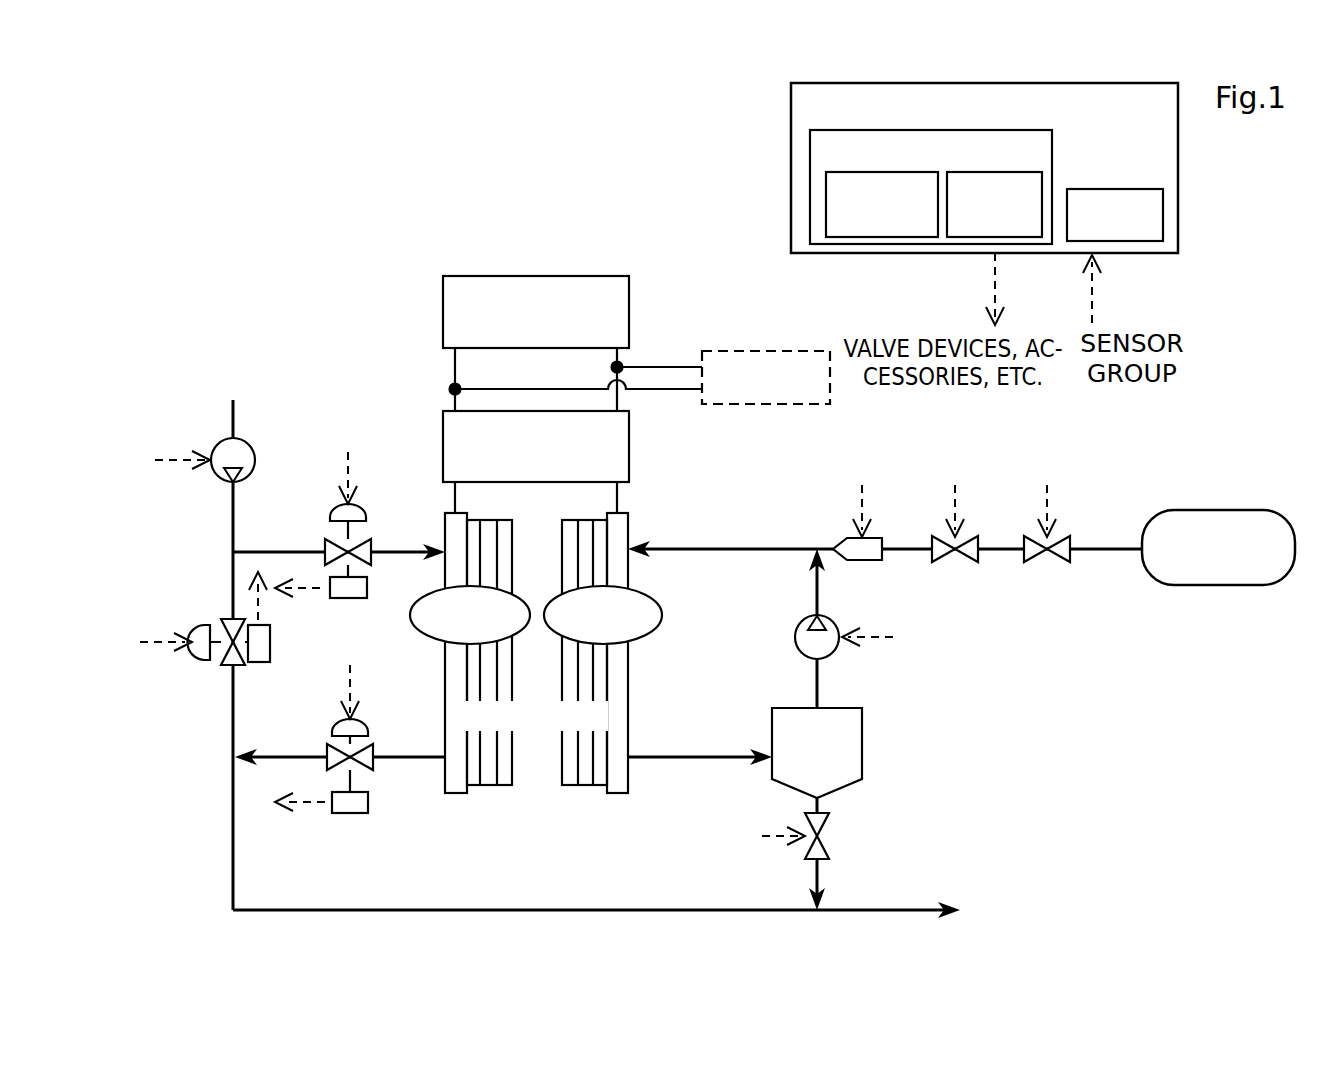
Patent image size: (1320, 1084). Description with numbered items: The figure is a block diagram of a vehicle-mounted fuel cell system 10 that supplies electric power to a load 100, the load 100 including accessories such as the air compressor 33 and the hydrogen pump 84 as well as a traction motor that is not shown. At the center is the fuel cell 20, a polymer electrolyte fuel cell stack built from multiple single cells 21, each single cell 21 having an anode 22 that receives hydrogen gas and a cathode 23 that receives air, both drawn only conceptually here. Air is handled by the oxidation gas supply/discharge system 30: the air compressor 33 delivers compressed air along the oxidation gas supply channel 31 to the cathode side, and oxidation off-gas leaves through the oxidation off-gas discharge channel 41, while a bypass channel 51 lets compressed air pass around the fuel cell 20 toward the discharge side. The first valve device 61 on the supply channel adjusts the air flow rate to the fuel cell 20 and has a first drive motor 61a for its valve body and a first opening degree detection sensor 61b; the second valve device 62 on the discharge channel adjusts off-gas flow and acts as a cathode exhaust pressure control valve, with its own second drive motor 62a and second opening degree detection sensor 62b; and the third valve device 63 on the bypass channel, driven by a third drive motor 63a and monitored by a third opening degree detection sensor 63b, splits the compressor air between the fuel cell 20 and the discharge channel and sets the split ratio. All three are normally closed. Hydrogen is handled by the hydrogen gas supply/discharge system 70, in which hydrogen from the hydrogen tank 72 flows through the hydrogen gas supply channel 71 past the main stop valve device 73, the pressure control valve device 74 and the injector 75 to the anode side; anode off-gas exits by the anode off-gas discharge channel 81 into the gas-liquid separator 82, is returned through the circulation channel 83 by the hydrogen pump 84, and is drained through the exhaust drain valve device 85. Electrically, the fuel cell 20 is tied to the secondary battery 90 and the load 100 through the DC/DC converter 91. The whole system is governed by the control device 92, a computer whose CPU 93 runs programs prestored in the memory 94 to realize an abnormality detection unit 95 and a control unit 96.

The fuel cell system 10 is at (158, 165).
The fuel cell 20 is at (550, 682).
The single cell 21 is at (493, 790).
The anode 22 is at (656, 597).
The cathode 23 is at (416, 607).
The oxidation gas supply/discharge system 30 is at (172, 368).
The oxidation gas supply channel 31 is at (262, 552).
The air compressor 33 is at (252, 450).
The oxidation off-gas discharge channel 41 is at (298, 757).
The bypass channel 51 is at (233, 598).
The first valve device 61 is at (356, 525).
The first drive motor 61a is at (358, 505).
The first opening degree detection sensor 61b is at (367, 588).
The second valve device 62 is at (356, 739).
The second drive motor 62a is at (358, 720).
The second opening degree detection sensor 62b is at (368, 800).
The third valve device 63 is at (205, 649).
The third drive motor 63a is at (197, 630).
The third opening degree detection sensor 63b is at (258, 665).
The hydrogen gas supply/discharge system 70 is at (1042, 453).
The hydrogen gas supply channel 71 is at (732, 549).
The hydrogen tank 72 is at (1205, 510).
The main stop valve device 73 is at (1068, 540).
The pressure control valve device 74 is at (977, 540).
The injector 75 is at (876, 538).
The anode off-gas discharge channel 81 is at (810, 880).
The gas-liquid separator 82 is at (862, 735).
The circulation channel 83 is at (820, 676).
The hydrogen pump 84 is at (806, 621).
The exhaust drain valve device 85 is at (830, 838).
The secondary battery 90 is at (629, 306).
The DC/DC converter 91 is at (629, 448).
The control device 92 is at (940, 168).
The CPU 93 is at (931, 167).
The memory 94 is at (1113, 189).
The abnormality detection unit 95 is at (838, 172).
The control unit 96 is at (995, 172).
The load 100 is at (790, 351).